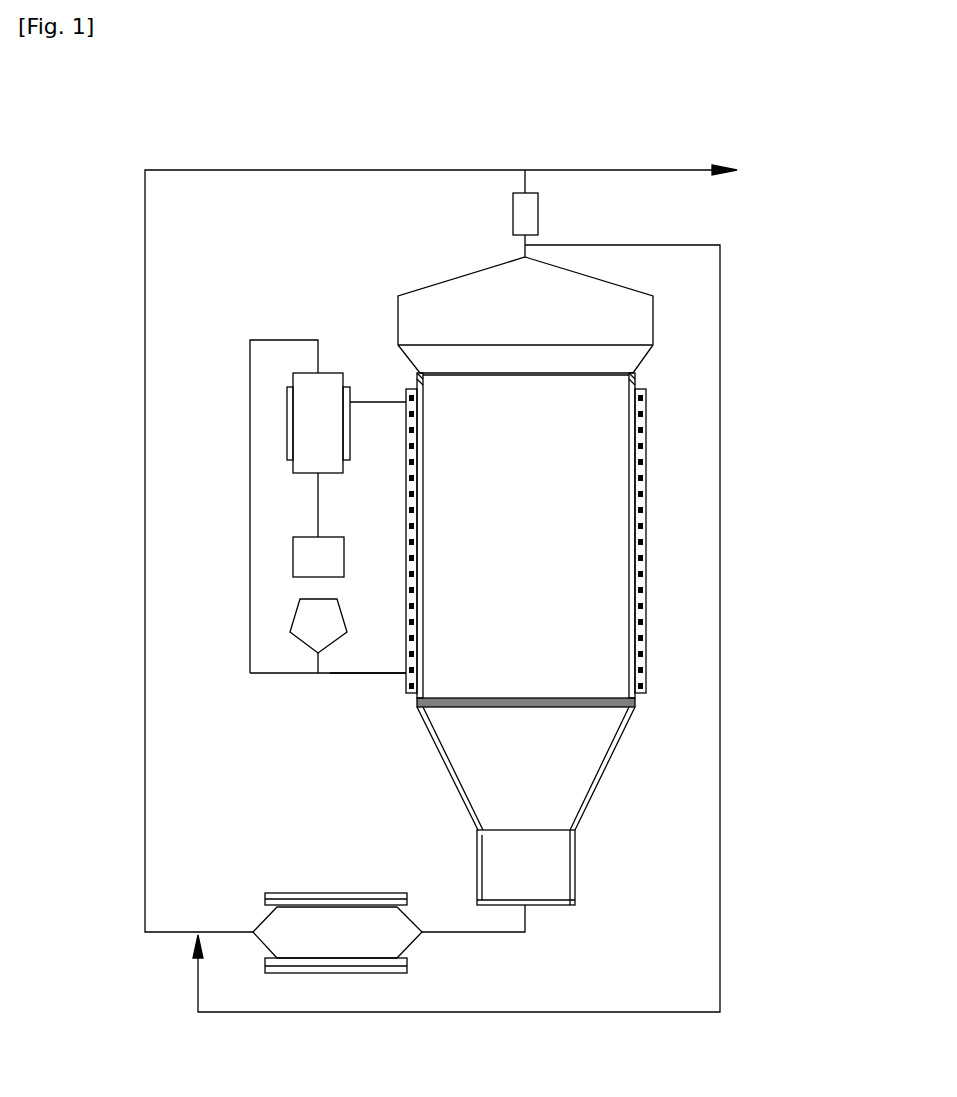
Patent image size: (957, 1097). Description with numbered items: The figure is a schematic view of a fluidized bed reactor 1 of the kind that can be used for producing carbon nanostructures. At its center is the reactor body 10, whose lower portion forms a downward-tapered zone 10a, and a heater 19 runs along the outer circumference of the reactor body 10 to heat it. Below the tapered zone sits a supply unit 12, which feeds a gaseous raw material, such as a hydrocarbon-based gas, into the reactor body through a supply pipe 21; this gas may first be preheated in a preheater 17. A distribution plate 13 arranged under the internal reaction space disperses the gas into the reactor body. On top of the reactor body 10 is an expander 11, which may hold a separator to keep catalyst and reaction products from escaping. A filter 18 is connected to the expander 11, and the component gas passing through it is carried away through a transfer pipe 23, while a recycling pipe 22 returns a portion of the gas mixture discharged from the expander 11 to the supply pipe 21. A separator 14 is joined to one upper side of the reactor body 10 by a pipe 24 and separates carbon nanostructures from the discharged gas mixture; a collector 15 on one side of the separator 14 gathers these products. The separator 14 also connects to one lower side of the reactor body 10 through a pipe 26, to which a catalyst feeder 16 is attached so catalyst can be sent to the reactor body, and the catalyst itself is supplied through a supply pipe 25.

The fluidized bed reactor 1 is at (335, 303).
The reactor body 10 is at (597, 603).
The downward-tapered zone 10a is at (607, 760).
The expander 11 is at (643, 322).
The supply unit 12 is at (552, 870).
The distribution plate 13 is at (465, 707).
The separator 14 is at (290, 418).
The collector 15 is at (293, 553).
The catalyst feeder 16 is at (293, 617).
The preheater 17 is at (332, 973).
The filter 18 is at (513, 207).
The heater 19 is at (647, 505).
The supply pipe 21 is at (468, 932).
The recycling pipe 22 is at (720, 948).
The transfer pipe 23 is at (640, 170).
The pipe 24 is at (377, 402).
The supply pipe 25 is at (367, 673).
The pipe 26 is at (250, 487).